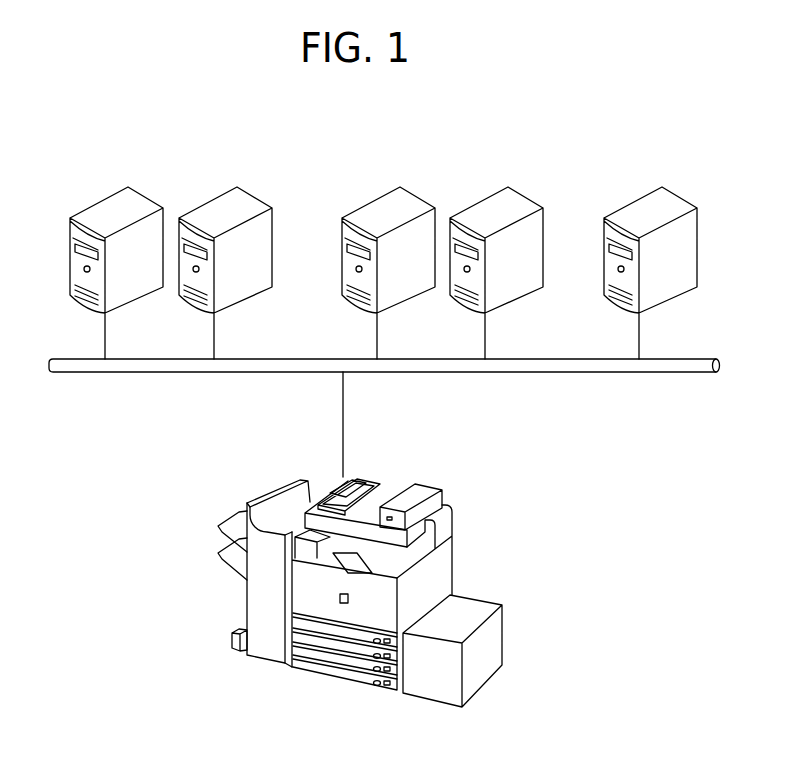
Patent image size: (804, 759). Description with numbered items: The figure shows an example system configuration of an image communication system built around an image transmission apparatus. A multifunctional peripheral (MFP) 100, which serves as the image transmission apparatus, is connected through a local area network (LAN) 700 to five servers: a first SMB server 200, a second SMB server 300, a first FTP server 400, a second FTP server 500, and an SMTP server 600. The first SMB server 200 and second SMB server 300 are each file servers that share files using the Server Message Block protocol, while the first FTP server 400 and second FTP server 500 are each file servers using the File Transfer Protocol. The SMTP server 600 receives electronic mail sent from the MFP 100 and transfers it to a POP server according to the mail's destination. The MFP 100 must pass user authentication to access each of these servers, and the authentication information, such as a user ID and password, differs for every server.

The multifunctional peripheral (MFP) 100 is at (258, 658).
The first SMB server 200 is at (108, 257).
The second SMB server 300 is at (217, 257).
The first FTP server 400 is at (380, 257).
The second FTP server 500 is at (488, 257).
The SMTP server 600 is at (642, 257).
The local area network (LAN) 700 is at (70, 358).